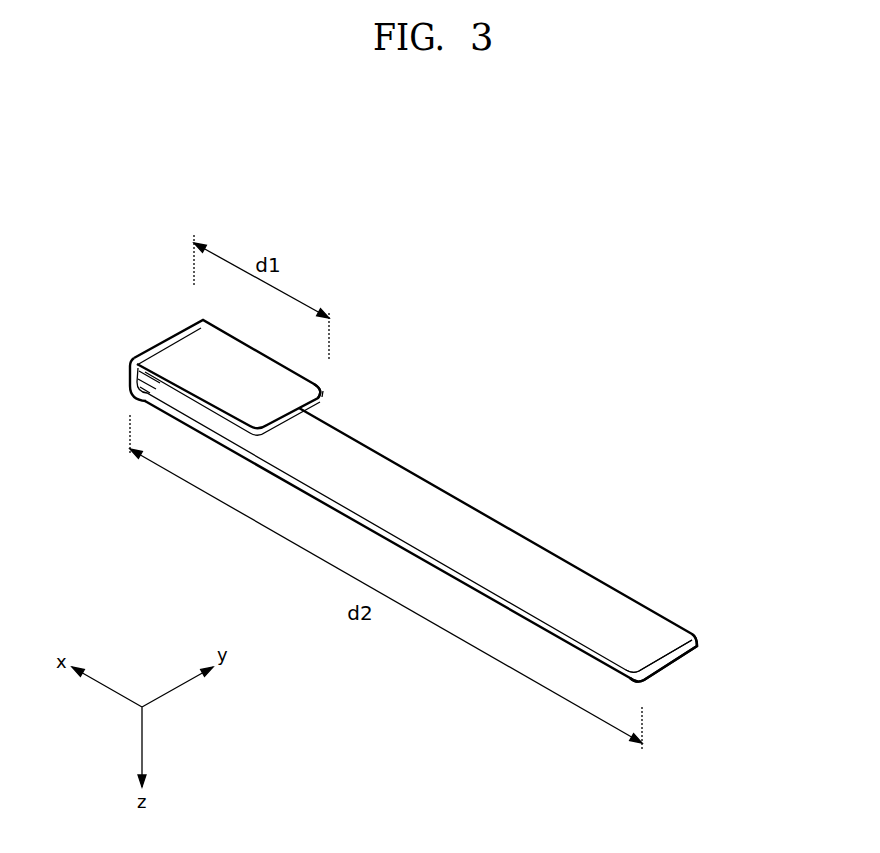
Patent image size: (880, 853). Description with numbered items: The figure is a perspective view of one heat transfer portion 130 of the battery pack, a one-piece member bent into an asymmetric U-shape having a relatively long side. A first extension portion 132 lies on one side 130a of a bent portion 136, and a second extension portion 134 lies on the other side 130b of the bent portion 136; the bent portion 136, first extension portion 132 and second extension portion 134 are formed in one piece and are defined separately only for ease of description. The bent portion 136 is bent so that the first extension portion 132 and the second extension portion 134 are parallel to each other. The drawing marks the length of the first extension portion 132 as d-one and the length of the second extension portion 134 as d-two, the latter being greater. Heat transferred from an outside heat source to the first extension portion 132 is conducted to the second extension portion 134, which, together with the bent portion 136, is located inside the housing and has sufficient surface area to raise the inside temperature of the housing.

The heat transfer portion 130 is at (572, 418).
The side of the bent portion 130a is at (327, 385).
The other side of the bent portion 130b is at (698, 627).
The first extension portion 132 is at (223, 373).
The second extension portion 134 is at (573, 572).
The bent portion 136 is at (131, 373).